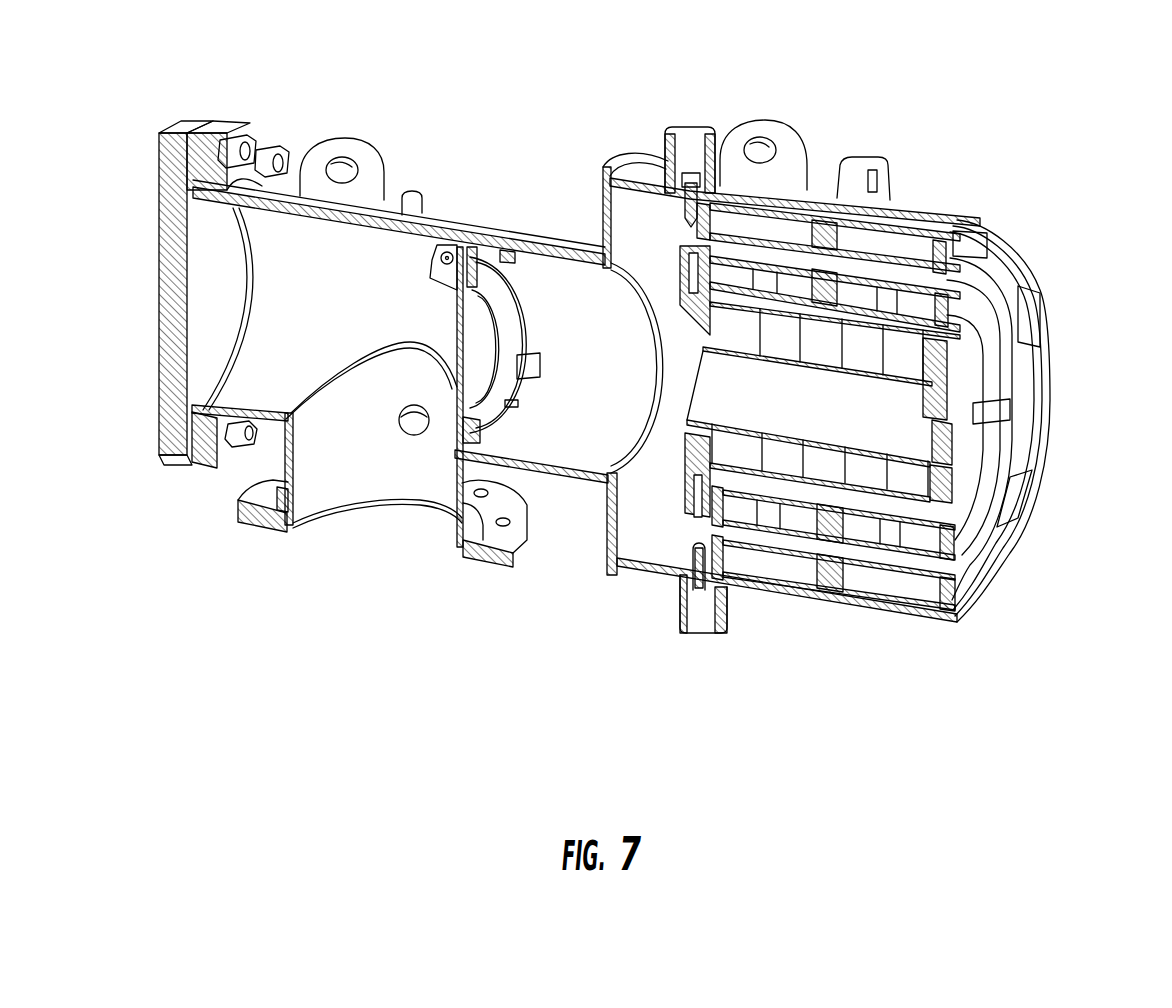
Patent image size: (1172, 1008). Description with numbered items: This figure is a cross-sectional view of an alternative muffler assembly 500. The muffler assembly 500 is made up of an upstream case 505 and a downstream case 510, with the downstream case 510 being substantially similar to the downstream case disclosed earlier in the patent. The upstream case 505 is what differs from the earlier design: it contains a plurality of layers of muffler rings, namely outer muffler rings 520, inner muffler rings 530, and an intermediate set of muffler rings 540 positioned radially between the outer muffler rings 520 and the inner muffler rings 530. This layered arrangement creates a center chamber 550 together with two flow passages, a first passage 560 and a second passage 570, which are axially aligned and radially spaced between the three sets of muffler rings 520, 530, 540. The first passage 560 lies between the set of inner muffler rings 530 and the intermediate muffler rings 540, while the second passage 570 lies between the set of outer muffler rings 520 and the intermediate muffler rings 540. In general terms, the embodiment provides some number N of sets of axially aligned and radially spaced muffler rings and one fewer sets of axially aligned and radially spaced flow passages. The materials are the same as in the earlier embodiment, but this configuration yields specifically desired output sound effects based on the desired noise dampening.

The muffler assembly 500 is at (942, 105).
The upstream case 505 is at (960, 650).
The downstream case 510 is at (408, 662).
The outer muffler rings 520 is at (918, 608).
The inner muffler rings 530 is at (903, 485).
The intermediate set of muffler rings 540 is at (788, 523).
The center chamber 550 is at (863, 407).
The first passage 560 is at (915, 332).
The second passage 570 is at (878, 268).